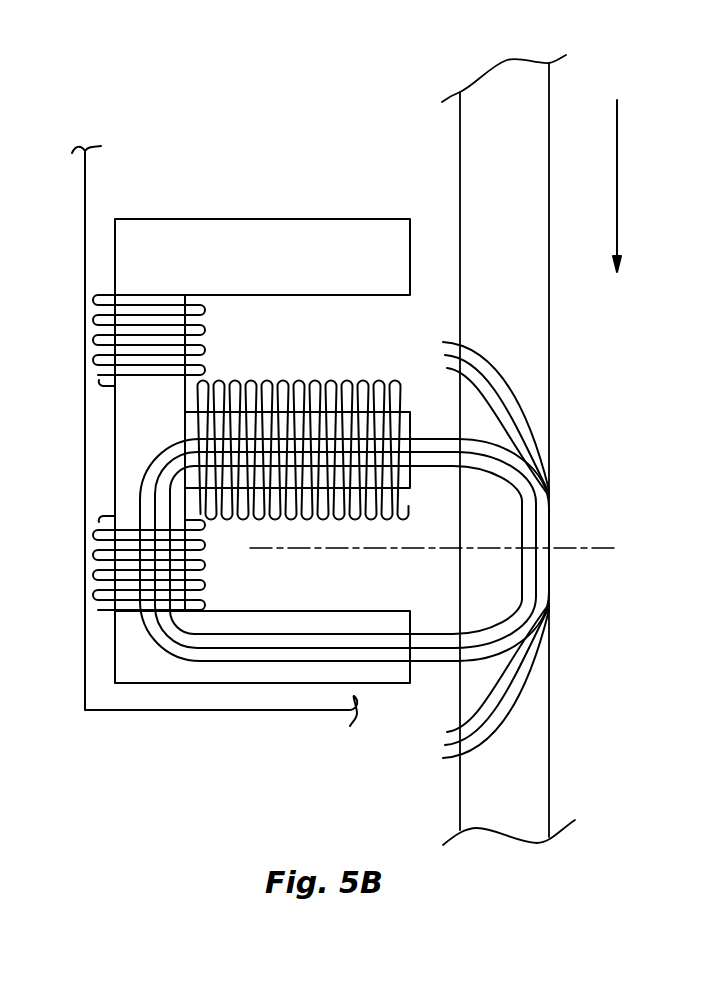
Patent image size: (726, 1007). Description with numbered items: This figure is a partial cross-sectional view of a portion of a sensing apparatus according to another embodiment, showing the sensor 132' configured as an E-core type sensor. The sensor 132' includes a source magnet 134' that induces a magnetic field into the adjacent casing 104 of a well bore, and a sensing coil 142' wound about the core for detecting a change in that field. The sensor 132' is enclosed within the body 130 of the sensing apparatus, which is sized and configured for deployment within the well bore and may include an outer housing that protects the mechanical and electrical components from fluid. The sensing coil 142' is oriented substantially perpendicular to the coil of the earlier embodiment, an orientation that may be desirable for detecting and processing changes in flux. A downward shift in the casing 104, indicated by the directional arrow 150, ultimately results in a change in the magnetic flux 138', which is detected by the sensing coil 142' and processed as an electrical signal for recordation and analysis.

The sensor 132' is at (355, 369).
The source magnet 134' is at (262, 210).
The sensing coil 142' is at (323, 413).
The magnetic flux 138' is at (546, 549).
The casing 104 is at (460, 125).
The body 130 is at (172, 712).
The directional arrow 150 is at (617, 181).